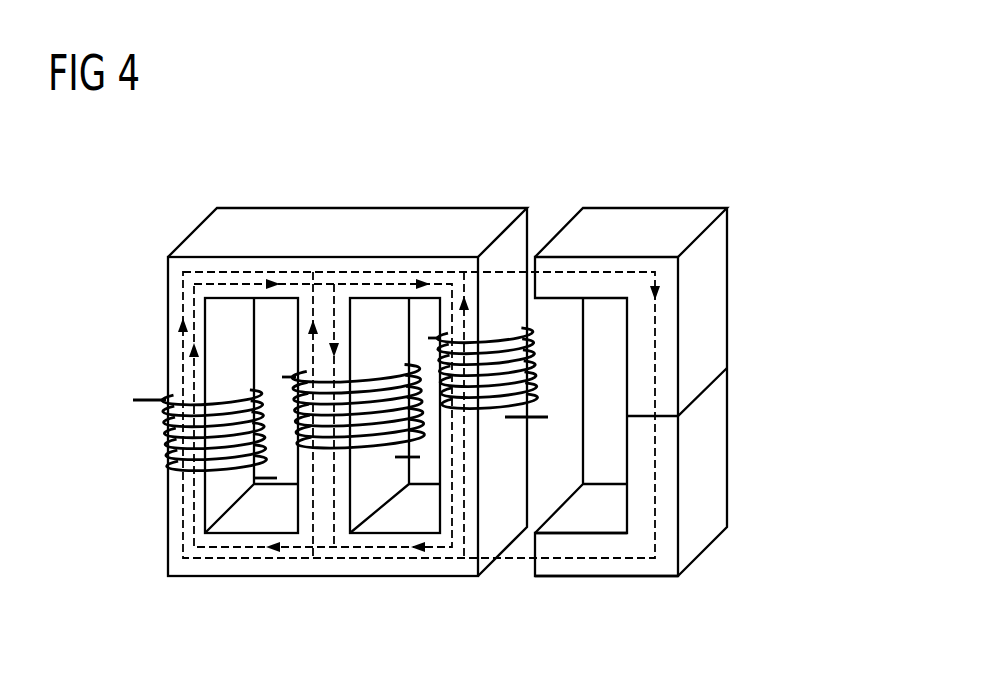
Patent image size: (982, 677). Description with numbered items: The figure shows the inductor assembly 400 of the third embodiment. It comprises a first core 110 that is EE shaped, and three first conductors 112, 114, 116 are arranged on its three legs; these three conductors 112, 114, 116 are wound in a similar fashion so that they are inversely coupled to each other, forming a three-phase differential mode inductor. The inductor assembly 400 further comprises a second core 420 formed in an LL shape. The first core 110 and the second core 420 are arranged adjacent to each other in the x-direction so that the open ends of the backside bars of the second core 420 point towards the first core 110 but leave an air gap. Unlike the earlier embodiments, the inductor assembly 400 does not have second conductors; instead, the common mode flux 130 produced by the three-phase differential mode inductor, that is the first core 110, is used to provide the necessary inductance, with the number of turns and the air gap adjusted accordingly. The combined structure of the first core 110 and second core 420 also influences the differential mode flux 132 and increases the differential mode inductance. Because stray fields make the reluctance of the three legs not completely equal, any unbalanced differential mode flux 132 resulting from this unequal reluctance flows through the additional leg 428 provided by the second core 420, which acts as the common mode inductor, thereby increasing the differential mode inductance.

The inductor assembly 400 is at (700, 170).
The first core 110 is at (338, 220).
The first conductor 112 is at (162, 442).
The first conductor 114 is at (373, 377).
The first conductor 116 is at (500, 337).
The second core 420 is at (628, 218).
The common mode flux 130 is at (655, 350).
The differential mode flux 132 is at (235, 548).
The additional leg 428 is at (667, 562).